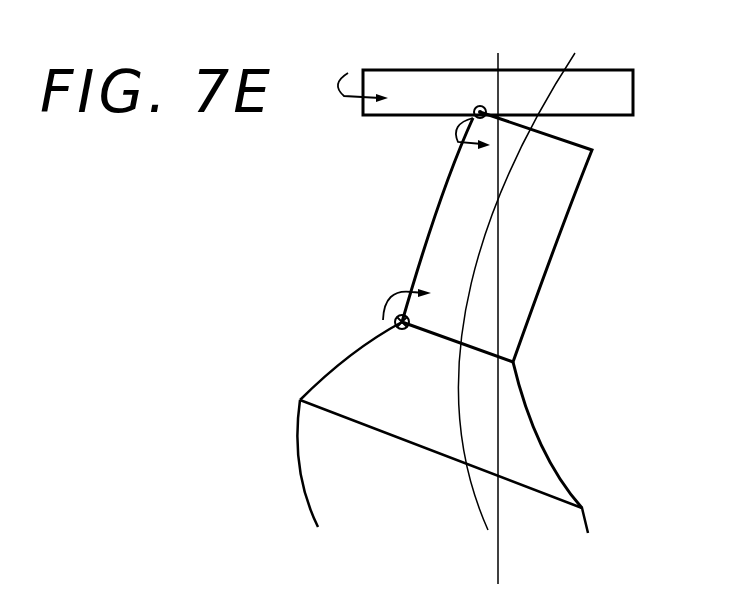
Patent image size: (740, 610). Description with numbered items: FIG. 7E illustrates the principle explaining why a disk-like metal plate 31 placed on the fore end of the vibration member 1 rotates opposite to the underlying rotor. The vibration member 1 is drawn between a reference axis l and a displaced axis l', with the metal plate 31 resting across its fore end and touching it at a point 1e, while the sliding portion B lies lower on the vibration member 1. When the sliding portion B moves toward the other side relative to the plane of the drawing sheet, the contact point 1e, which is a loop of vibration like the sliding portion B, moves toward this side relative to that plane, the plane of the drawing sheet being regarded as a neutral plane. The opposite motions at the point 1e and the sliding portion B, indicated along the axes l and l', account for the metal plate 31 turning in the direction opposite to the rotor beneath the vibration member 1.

The disk-like metal plate 31 is at (623, 98).
The point in contact with the metal plate 1e is at (440, 115).
The vibration member 1 is at (540, 250).
The sliding portion B is at (370, 335).
The reference axis l is at (497, 305).
The rotated reference axis l' is at (521, 278).